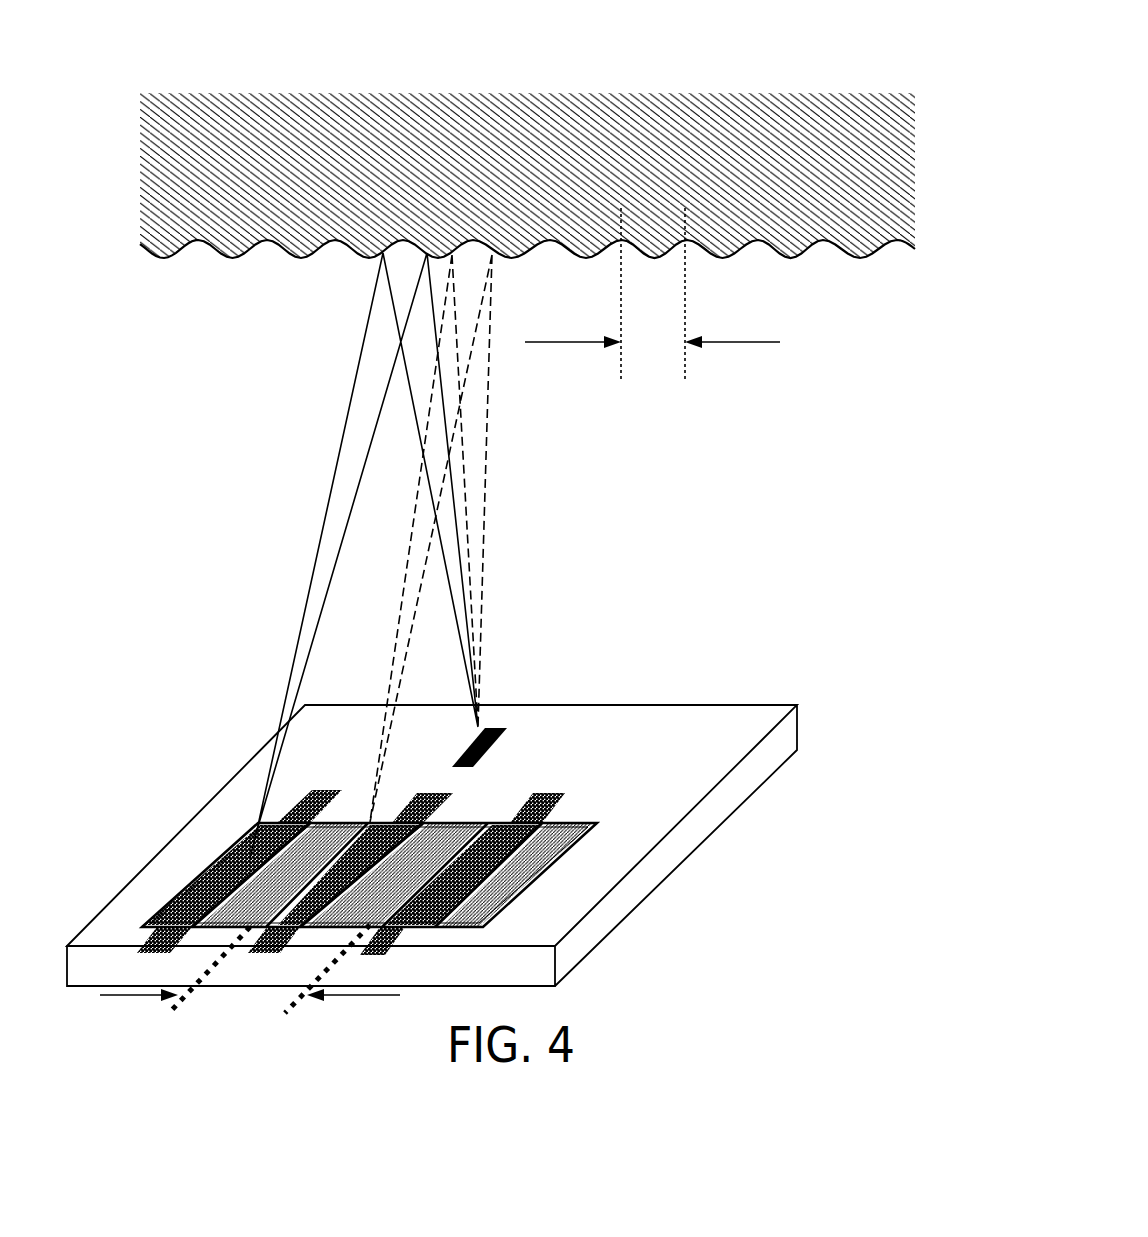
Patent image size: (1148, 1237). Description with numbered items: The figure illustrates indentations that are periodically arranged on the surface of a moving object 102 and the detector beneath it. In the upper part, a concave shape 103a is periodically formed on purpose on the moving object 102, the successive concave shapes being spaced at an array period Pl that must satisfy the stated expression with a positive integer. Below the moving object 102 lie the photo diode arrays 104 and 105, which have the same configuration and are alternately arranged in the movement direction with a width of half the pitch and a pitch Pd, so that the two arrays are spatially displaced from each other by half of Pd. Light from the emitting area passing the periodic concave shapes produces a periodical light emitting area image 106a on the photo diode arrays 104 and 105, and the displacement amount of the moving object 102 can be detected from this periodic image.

The moving object 102 is at (885, 128).
The concave shape 103a is at (820, 247).
The photo diode array 104 is at (493, 820).
The photo diode array 105 is at (583, 822).
The periodical light emitting area image 106a is at (557, 797).
The array period Pl is at (652, 295).
The pitch Pd is at (250, 978).